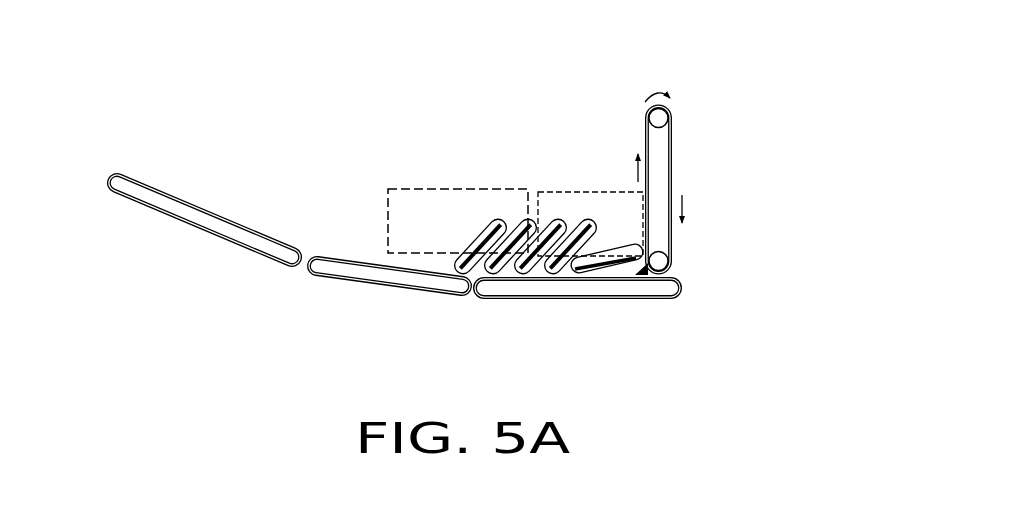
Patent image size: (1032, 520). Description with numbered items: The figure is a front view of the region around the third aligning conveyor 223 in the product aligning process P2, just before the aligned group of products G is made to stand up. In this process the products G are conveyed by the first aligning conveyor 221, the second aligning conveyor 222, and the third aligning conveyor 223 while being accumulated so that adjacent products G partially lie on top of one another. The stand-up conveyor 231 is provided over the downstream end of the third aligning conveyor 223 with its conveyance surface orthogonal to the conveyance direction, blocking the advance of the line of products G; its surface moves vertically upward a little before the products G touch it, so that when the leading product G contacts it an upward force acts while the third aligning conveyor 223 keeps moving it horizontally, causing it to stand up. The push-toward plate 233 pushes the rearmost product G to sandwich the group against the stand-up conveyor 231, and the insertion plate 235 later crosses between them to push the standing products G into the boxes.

The product aligning process P2 is at (139, 84).
The first aligning conveyor 221 is at (197, 228).
The second aligning conveyor 222 is at (373, 289).
The third aligning conveyor 223 is at (590, 300).
The stand-up conveyor 231 is at (714, 141).
The push-toward plate 233 is at (460, 187).
The insertion plate 235 is at (550, 190).
The product G is at (594, 222).